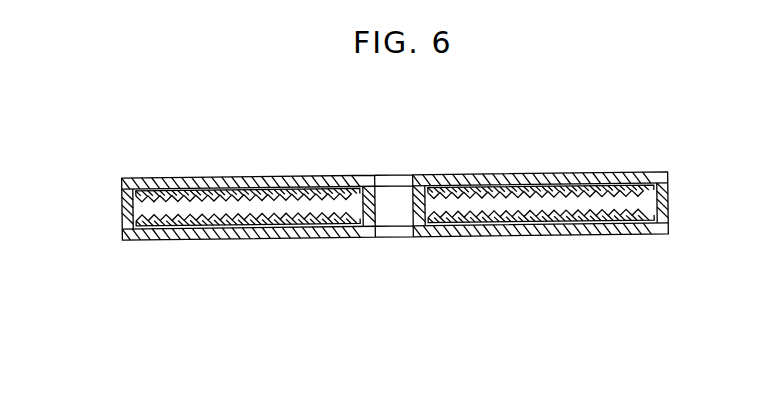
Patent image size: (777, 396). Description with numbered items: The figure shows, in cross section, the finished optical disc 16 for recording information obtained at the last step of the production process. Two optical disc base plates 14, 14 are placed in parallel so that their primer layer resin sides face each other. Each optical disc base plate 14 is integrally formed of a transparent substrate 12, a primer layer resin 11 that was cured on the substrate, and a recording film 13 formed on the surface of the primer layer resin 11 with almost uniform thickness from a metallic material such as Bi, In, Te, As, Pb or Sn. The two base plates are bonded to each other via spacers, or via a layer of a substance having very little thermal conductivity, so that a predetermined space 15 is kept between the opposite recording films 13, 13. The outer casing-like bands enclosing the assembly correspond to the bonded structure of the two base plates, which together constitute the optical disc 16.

The primer layer resin 11 is at (503, 183).
The transparent substrate 12 is at (557, 183).
The recording film 13 is at (583, 192).
The optical disc base plate 14 is at (315, 176).
The space 15 is at (150, 206).
The optical disc 16 is at (225, 175).